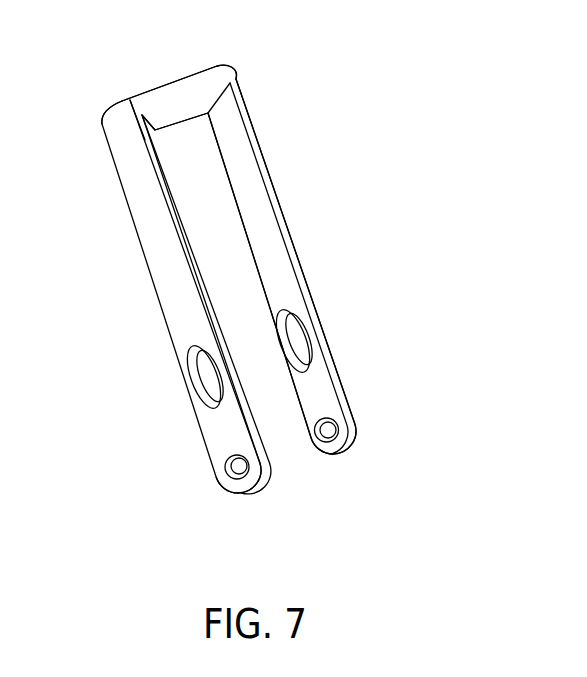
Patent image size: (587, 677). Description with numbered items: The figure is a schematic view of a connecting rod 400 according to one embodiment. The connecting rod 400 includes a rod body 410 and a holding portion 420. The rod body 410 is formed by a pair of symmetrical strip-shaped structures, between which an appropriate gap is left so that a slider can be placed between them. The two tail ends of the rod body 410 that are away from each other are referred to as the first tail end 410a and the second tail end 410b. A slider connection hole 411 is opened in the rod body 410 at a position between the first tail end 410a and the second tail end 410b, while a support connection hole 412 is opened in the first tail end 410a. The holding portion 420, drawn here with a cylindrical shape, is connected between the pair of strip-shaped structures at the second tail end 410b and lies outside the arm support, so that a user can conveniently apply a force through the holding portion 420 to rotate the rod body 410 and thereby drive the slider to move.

The connecting rod 400 is at (137, 454).
The rod body 410 is at (254, 220).
The first tail end 410a is at (259, 504).
The second tail end 410b is at (106, 94).
The slider connection hole 411 is at (298, 338).
The support connection hole 412 is at (327, 428).
The holding portion 420 is at (177, 97).